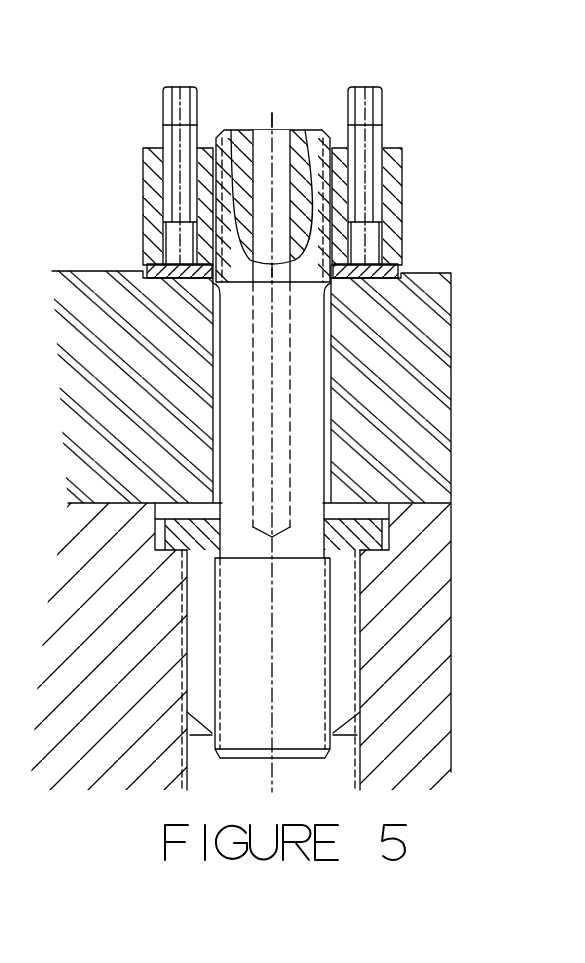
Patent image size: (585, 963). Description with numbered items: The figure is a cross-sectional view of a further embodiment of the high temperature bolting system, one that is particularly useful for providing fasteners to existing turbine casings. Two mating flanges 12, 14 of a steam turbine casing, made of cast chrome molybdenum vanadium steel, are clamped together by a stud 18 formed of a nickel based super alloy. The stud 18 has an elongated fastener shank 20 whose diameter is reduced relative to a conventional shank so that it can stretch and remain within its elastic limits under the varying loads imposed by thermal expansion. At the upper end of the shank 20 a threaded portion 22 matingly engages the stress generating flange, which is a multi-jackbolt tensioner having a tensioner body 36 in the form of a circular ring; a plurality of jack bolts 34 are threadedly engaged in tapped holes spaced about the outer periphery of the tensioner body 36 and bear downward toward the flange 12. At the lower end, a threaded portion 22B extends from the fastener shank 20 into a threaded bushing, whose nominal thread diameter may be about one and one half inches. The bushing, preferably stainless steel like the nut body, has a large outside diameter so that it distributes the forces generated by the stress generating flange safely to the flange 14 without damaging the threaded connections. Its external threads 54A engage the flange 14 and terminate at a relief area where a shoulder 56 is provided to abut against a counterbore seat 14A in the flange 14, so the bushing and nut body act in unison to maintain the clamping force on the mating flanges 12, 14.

The mating flange 12 is at (451, 287).
The mating flange 14 is at (452, 537).
The counterbore seat 14A is at (343, 490).
The stud 18 is at (302, 129).
The fastener shank 20 is at (324, 390).
The threaded portion 22 is at (321, 192).
The threaded portion 22B is at (330, 700).
The bolts 34 is at (182, 87).
The tensioner body 36 is at (397, 210).
The external threads 54A is at (362, 635).
The shoulder 56 is at (355, 523).